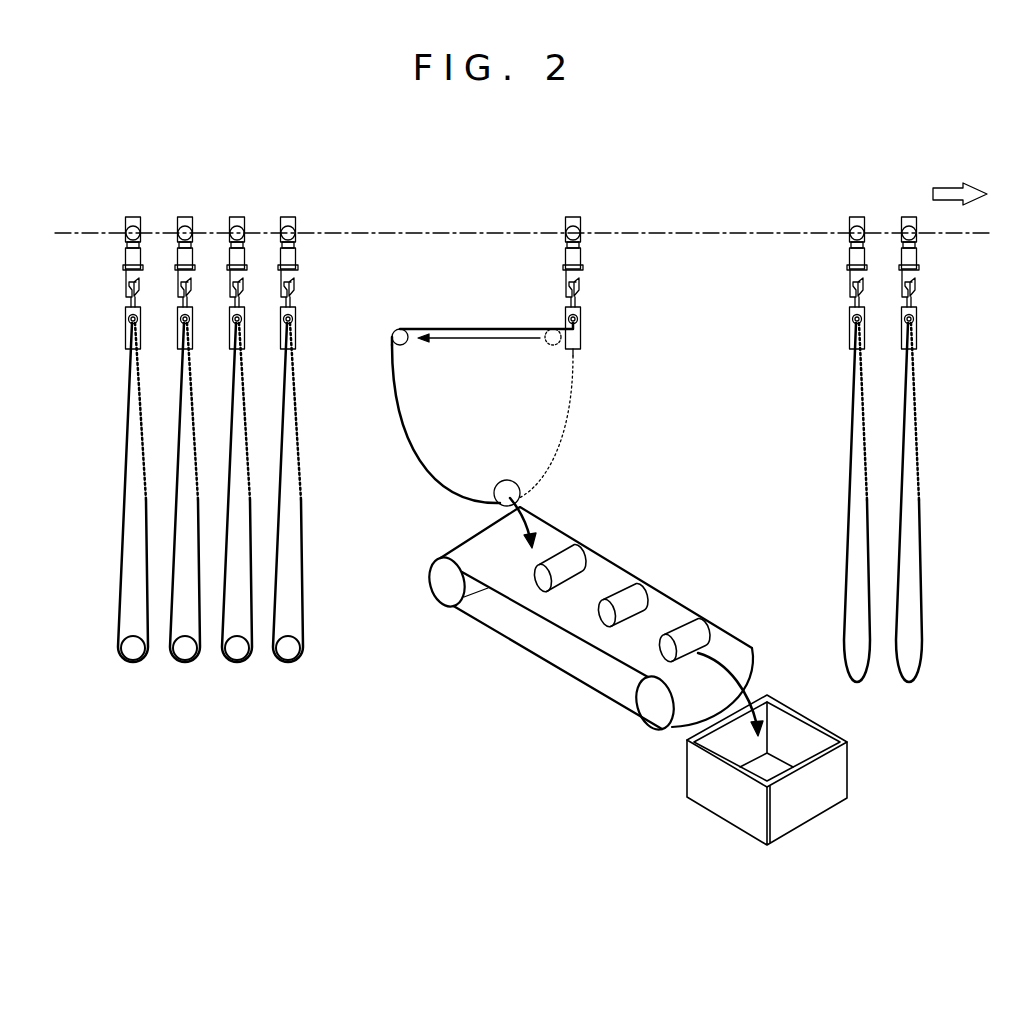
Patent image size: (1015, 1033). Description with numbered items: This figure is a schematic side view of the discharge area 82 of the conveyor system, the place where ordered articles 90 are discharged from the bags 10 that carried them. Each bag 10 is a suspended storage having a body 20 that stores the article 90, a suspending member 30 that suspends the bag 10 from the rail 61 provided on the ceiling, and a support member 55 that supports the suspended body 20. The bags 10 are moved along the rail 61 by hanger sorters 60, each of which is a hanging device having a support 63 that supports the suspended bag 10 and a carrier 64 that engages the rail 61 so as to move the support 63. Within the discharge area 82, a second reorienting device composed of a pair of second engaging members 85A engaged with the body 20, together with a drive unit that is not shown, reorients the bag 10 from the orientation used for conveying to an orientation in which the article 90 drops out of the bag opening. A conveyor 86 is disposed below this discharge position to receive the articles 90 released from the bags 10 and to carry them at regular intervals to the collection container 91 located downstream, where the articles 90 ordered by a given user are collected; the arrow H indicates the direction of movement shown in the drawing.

The bag 10 is at (495, 318).
The body 20 is at (397, 430).
The suspending member 30 is at (582, 317).
The support member 55 is at (580, 318).
The hanger sorter 60 is at (521, 218).
The rail 61 is at (704, 233).
The support 63 is at (292, 258).
The carrier 64 is at (283, 233).
The discharge area 82 is at (522, 181).
The second engaging member 85A is at (399, 330).
The conveyor 86 is at (572, 660).
The article 90 is at (503, 482).
The collection container 91 is at (846, 765).
The conveyance direction H is at (948, 195).